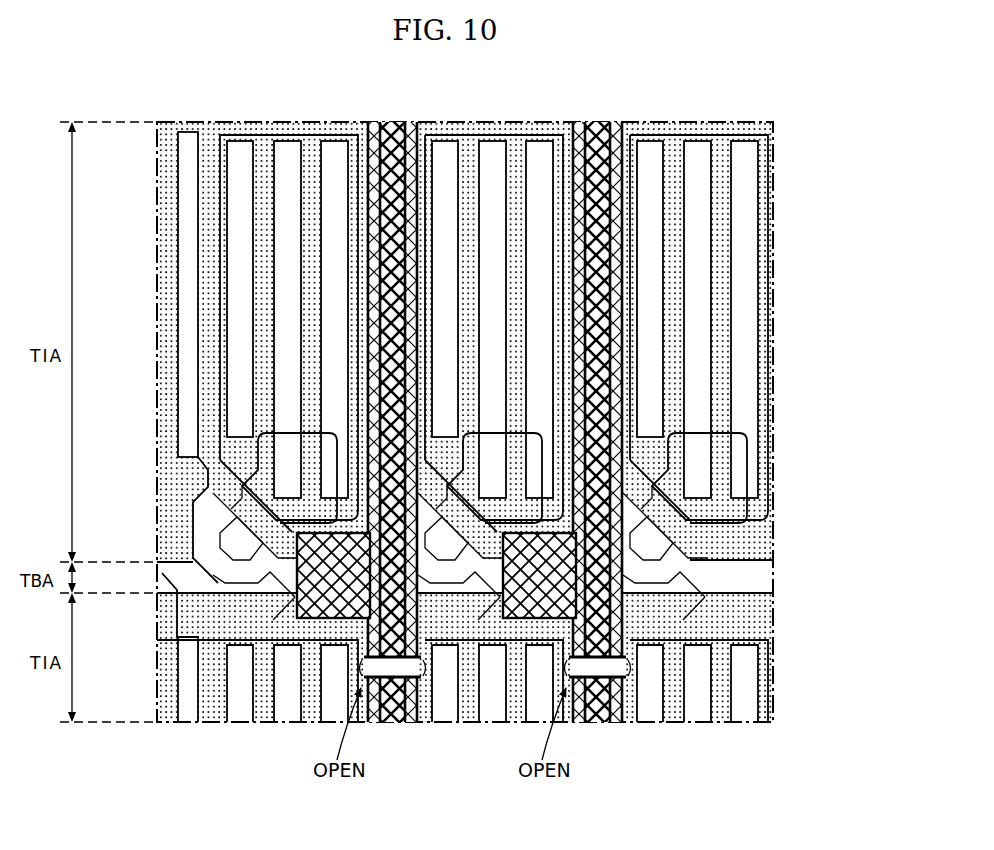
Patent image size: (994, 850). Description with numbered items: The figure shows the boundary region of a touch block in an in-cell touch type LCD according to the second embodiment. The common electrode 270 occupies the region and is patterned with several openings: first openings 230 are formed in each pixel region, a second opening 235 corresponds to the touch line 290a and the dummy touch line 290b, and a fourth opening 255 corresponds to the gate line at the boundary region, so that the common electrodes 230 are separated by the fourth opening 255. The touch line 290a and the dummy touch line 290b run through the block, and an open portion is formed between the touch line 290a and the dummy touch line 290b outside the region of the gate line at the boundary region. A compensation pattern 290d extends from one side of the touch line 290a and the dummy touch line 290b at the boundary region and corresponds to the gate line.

The common electrode 270 is at (757, 137).
The first openings 230 is at (752, 332).
The dummy touch line 290b is at (405, 122).
The touch line 290a is at (404, 723).
The fourth opening 255 is at (750, 576).
The compensation pattern 290d is at (292, 599).
The second opening 235 is at (387, 127).